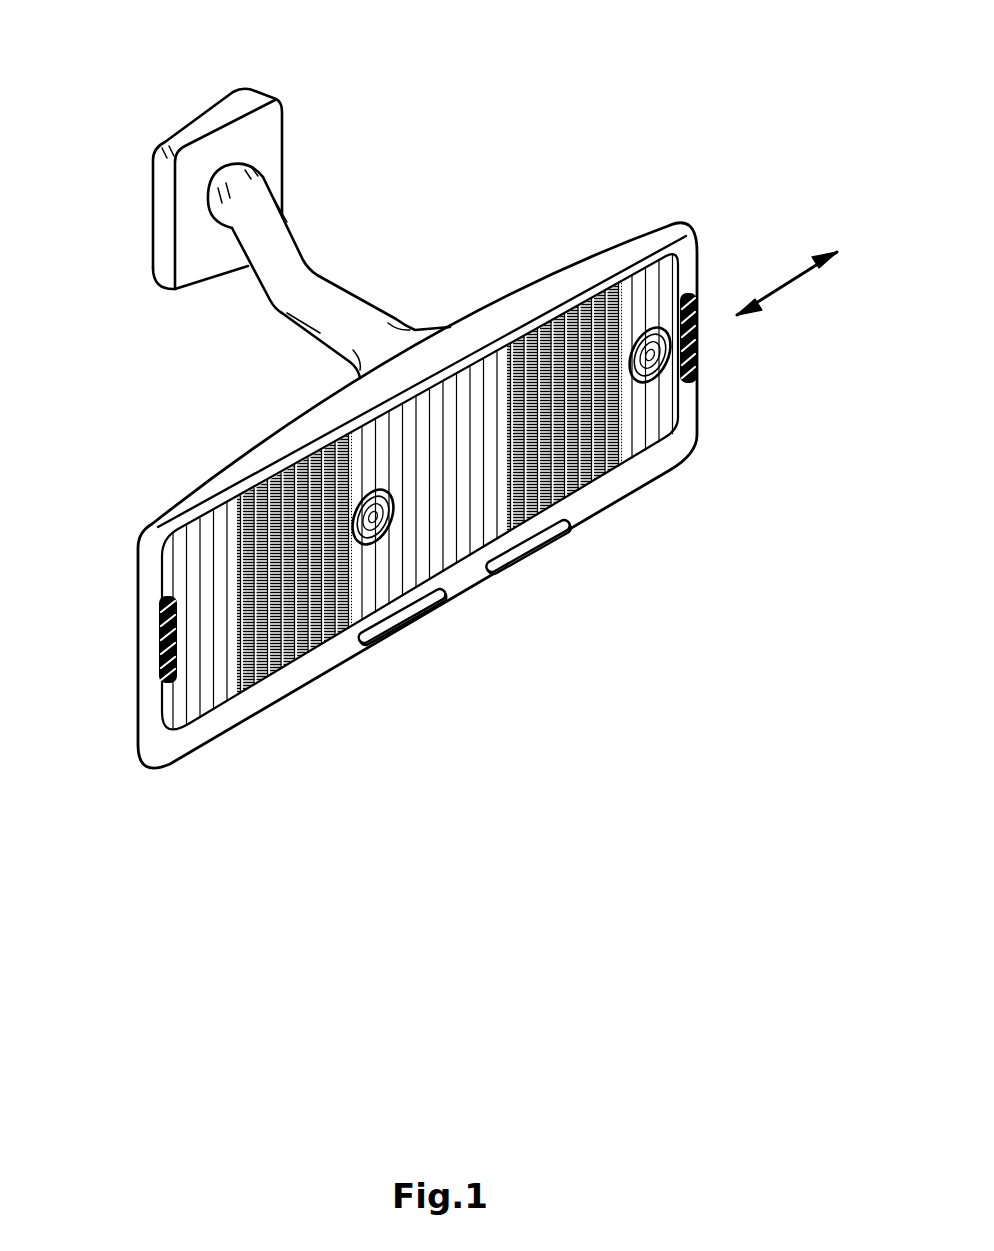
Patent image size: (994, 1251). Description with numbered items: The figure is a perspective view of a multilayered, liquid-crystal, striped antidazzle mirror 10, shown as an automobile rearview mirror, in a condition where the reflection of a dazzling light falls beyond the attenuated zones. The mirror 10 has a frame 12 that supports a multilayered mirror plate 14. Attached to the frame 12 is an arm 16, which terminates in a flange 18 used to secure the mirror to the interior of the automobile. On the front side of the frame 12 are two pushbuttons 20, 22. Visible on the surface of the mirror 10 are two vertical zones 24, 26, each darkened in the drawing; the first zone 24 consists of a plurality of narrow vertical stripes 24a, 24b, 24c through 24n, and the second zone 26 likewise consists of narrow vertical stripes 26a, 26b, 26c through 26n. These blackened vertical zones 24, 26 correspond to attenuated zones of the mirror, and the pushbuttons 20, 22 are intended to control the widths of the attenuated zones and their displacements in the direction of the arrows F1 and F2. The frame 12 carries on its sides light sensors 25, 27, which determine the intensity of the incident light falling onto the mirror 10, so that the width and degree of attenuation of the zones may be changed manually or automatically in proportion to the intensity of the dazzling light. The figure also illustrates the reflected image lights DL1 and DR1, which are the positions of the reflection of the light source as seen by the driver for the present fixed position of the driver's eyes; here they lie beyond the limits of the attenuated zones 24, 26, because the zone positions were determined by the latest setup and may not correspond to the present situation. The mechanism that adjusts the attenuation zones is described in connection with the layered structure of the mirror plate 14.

The mirror 10 is at (453, 437).
The frame 12 is at (453, 466).
The multilayered mirror plate 14 is at (483, 466).
The arm 16 is at (312, 283).
The flange 18 is at (263, 133).
The pushbutton 20 is at (433, 608).
The pushbutton 22 is at (573, 533).
The vertical zone 24 is at (305, 650).
The narrow vertical stripe 24a is at (347, 637).
The narrow vertical stripe 24b is at (336, 644).
The narrow vertical stripe 24c is at (326, 650).
The narrow vertical stripe 24n is at (243, 693).
The light sensor 25 is at (160, 650).
The vertical zone 26 is at (533, 323).
The narrow vertical stripe 26a is at (618, 280).
The narrow vertical stripe 26b is at (603, 297).
The narrow vertical stripe 26c is at (580, 300).
The narrow vertical stripe 26n is at (510, 340).
The light sensor 27 is at (697, 373).
The reflected image light DR1 is at (693, 293).
The reflected image light DL1 is at (232, 489).
The arrow F1 is at (804, 269).
The arrow F2 is at (738, 329).